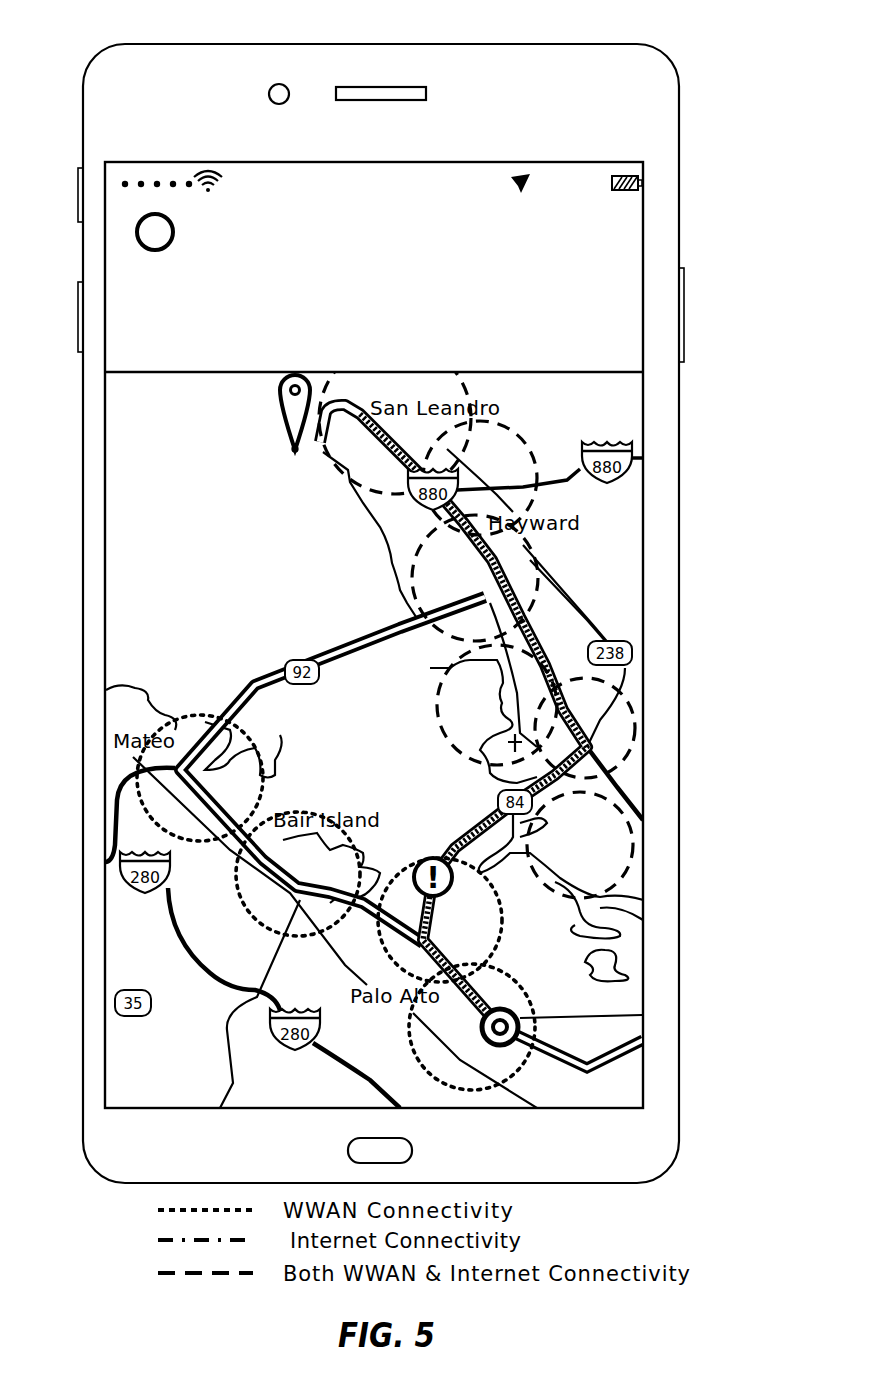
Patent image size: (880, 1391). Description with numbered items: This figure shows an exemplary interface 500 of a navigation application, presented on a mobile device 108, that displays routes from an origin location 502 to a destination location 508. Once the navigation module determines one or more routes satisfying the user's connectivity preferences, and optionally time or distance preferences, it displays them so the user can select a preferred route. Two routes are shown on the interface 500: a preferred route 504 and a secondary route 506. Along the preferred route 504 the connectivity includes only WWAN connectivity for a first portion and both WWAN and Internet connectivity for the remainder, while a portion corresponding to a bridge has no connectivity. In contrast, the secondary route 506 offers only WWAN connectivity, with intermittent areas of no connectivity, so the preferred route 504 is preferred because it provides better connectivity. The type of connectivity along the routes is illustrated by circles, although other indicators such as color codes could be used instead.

The mobile device 108 is at (485, 44).
The interface 500 is at (466, 162).
The origin location 502 is at (520, 1027).
The preferred route 504 is at (543, 642).
The secondary route 506 is at (197, 798).
The destination location 508 is at (294, 452).